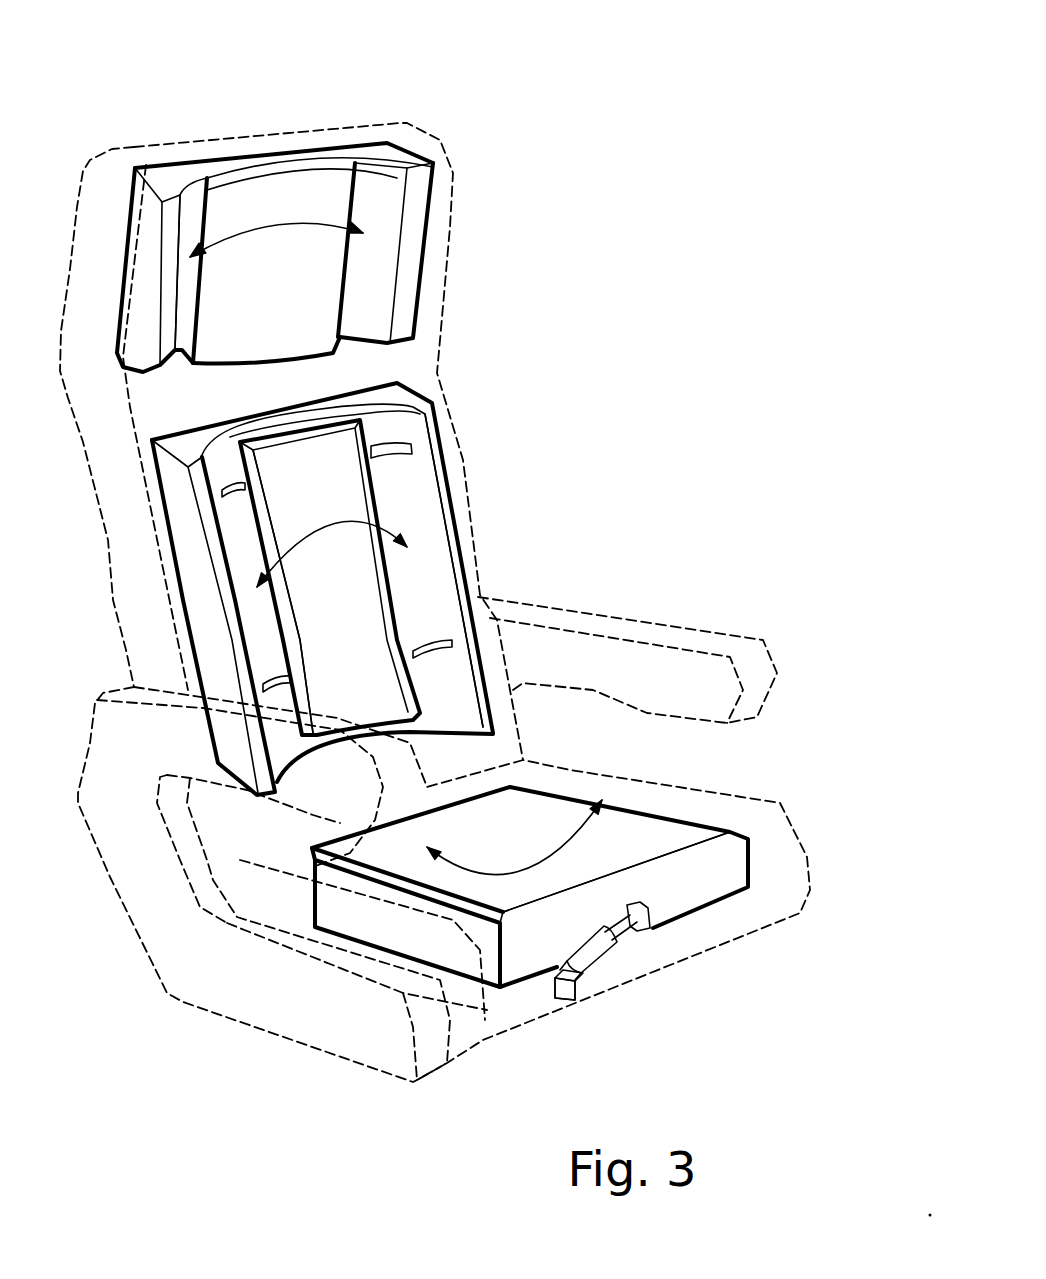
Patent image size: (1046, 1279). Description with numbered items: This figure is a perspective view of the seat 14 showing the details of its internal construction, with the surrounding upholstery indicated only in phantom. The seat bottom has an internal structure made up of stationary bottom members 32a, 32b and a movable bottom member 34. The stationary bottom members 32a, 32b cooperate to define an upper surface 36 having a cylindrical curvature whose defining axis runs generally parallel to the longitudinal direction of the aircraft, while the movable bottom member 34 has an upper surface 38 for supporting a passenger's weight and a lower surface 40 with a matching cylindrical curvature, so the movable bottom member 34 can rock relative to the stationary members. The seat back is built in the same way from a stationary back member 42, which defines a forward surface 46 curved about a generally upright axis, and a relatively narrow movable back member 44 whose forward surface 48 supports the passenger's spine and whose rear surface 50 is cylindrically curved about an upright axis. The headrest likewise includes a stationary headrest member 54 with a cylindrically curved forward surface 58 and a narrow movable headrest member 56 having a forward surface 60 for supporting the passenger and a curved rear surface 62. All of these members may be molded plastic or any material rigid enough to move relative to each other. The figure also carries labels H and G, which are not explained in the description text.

The seat 14 is at (505, 137).
The stationary bottom member 32a is at (512, 968).
The stationary bottom member 32b is at (740, 872).
The movable bottom member 34 is at (677, 875).
The upper surface 36 is at (705, 900).
The upper surface 38 is at (675, 826).
The lower surface 40 is at (635, 928).
The stationary back member 42 is at (440, 428).
The movable back member 44 is at (378, 608).
The forward surface 46 is at (413, 472).
The forward surface 48 is at (360, 642).
The rear surface 50 is at (385, 578).
The stationary headrest member 54 is at (415, 252).
The movable headrest member 56 is at (342, 203).
The forward surface 58 is at (380, 287).
The forward surface 60 is at (291, 300).
The rear surface 62 is at (202, 207).
The hook fasteners H is at (388, 442).
The ground connector G is at (592, 965).